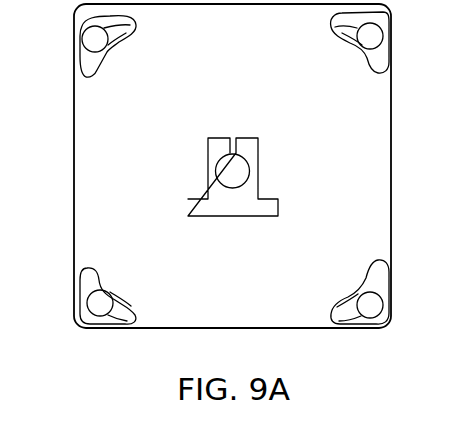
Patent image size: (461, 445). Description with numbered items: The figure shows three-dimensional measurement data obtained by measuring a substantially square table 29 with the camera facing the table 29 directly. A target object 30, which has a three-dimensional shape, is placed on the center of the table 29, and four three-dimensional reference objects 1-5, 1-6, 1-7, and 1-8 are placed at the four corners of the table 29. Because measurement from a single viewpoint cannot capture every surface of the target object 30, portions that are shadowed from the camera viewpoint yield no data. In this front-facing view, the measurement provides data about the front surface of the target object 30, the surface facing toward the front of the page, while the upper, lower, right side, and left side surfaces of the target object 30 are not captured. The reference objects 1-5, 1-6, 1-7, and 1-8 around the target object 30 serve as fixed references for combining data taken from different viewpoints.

The table 29 is at (208, 328).
The target object 30 is at (233, 138).
The 3D reference object 1-5 is at (84, 79).
The 3D reference object 1-6 is at (86, 262).
The 3D reference object 1-7 is at (381, 78).
The 3D reference object 1-8 is at (382, 261).